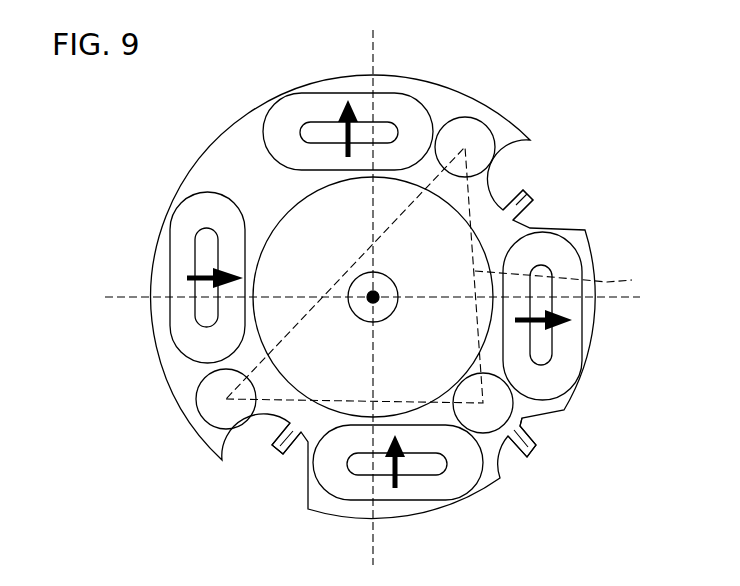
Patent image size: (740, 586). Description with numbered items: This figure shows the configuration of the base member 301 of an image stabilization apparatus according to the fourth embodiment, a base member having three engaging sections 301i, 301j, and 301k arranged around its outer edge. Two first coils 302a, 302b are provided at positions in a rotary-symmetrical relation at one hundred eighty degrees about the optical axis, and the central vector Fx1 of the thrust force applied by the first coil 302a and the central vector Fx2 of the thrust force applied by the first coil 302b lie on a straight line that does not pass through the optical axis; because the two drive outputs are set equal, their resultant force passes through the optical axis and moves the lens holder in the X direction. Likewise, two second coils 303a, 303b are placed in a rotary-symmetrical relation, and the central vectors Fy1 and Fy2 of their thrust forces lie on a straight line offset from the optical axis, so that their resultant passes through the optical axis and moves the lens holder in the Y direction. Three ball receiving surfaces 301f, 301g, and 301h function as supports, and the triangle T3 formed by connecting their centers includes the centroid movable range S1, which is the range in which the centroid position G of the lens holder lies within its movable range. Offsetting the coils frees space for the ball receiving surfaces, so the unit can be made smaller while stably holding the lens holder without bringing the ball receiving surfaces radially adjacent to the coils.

The base member 301 is at (323, 80).
The ball receiving surface 301f is at (476, 140).
The ball receiving surface 301g is at (196, 399).
The ball receiving surface 301h is at (513, 404).
The engaging section 301i is at (535, 198).
The engaging section 301j is at (275, 453).
The engaging section 301k is at (540, 451).
The first coil 302a is at (583, 248).
The first coil 302b is at (188, 263).
The second coil 303a is at (403, 100).
The second coil 303b is at (343, 490).
The centroid position G is at (378, 295).
The centroid movable range S1 is at (391, 316).
The triangle T3 is at (566, 281).
The central vector of thrust force Fx1 is at (563, 322).
The central vector of thrust force Fx2 is at (236, 280).
The central vector of thrust force Fy1 is at (327, 128).
The central vector of thrust force Fy2 is at (413, 460).